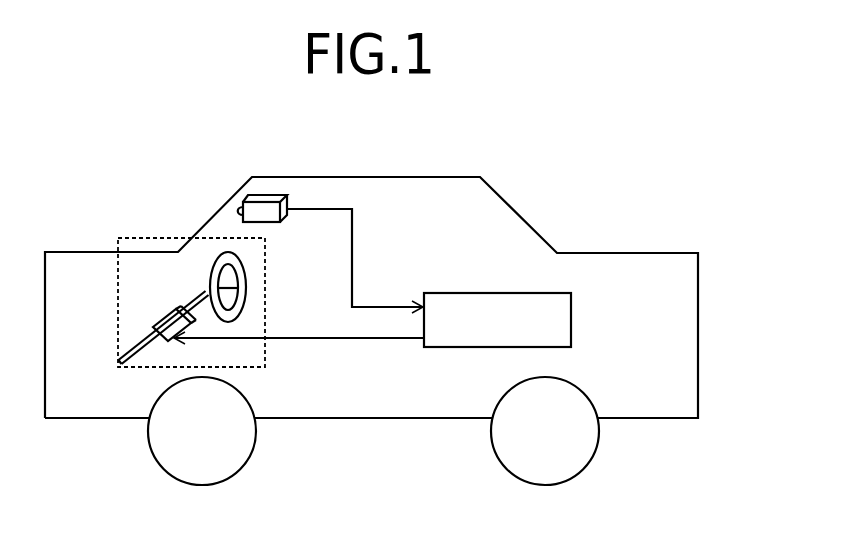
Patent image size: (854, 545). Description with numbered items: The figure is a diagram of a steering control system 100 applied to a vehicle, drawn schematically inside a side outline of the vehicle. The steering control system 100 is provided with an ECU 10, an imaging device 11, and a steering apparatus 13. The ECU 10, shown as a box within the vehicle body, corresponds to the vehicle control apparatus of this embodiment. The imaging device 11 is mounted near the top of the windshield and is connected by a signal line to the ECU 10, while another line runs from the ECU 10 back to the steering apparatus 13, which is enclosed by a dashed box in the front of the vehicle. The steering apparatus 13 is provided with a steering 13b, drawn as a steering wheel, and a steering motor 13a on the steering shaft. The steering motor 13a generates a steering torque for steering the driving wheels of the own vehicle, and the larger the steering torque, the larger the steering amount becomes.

The steering control system 100 is at (553, 211).
The ECU 10 is at (441, 292).
The imaging device 11 is at (264, 210).
The steering apparatus 13 is at (153, 237).
The steering motor 13a is at (165, 312).
The steering 13b is at (244, 280).